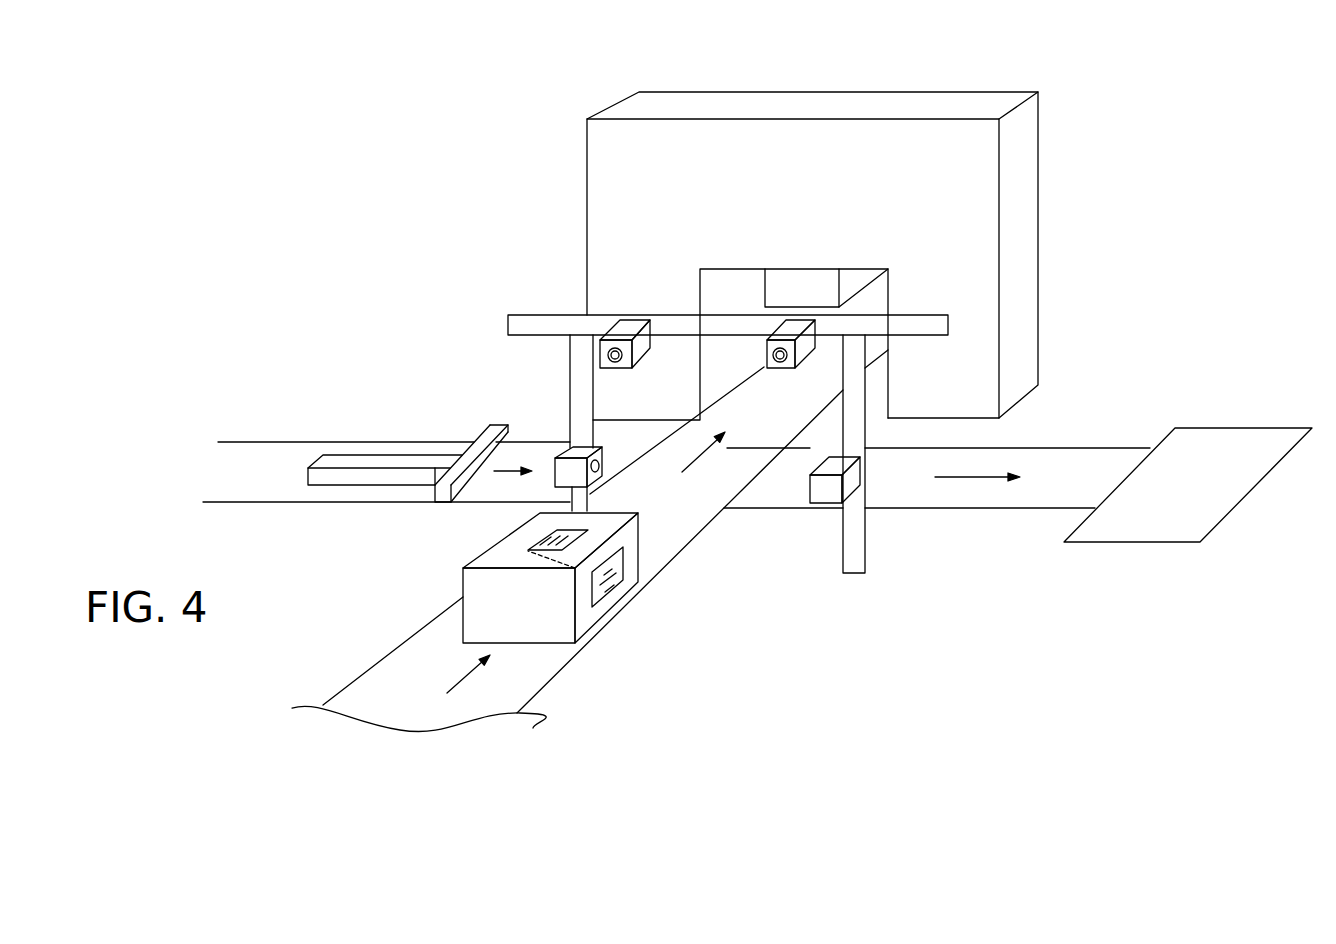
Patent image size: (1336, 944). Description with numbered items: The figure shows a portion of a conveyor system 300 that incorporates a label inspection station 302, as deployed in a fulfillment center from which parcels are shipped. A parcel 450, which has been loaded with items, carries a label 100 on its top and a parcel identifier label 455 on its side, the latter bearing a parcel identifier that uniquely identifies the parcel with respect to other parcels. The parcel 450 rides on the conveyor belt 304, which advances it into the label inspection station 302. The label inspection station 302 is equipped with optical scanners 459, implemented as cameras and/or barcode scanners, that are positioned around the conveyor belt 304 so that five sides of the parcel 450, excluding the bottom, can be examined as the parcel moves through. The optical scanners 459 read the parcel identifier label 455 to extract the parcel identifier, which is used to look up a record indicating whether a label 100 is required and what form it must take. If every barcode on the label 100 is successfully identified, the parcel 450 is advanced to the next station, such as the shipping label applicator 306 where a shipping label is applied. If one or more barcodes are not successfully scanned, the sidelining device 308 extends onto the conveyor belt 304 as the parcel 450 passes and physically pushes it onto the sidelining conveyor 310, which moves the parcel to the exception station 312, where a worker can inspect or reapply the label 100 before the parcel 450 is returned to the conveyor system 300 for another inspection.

The conveyor system 300 is at (450, 142).
The shipping label applicator 306 is at (831, 108).
The label inspection station 302 is at (523, 315).
The optical scanners 459 is at (588, 447).
The sidelining device 308 is at (506, 432).
The conveyor belt 304 is at (560, 673).
The sidelining conveyor 310 is at (1132, 452).
The exception station 312 is at (1220, 443).
The parcel 450 is at (471, 565).
The label 100 is at (581, 530).
The parcel identifier label 455 is at (609, 590).